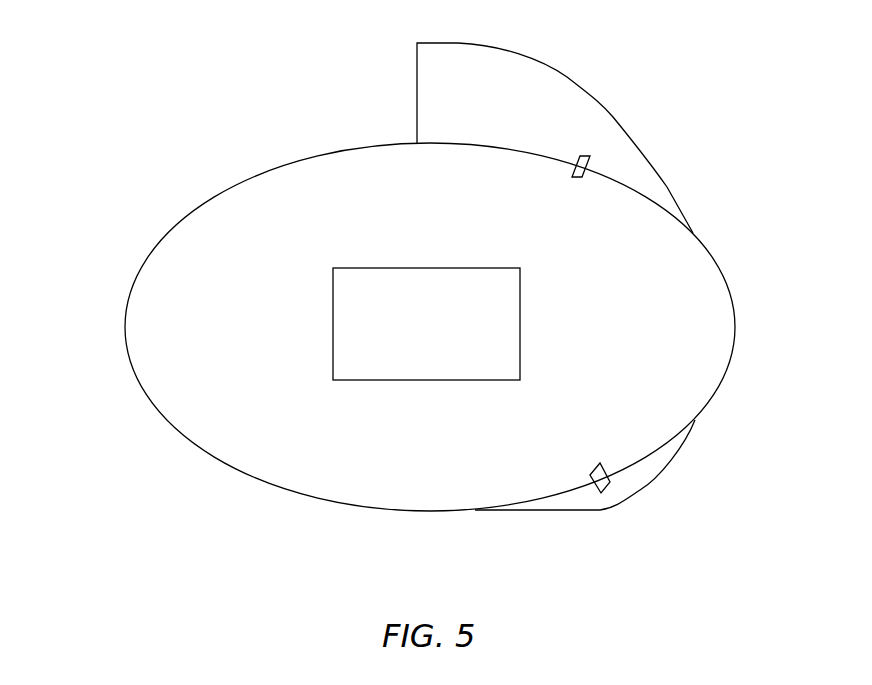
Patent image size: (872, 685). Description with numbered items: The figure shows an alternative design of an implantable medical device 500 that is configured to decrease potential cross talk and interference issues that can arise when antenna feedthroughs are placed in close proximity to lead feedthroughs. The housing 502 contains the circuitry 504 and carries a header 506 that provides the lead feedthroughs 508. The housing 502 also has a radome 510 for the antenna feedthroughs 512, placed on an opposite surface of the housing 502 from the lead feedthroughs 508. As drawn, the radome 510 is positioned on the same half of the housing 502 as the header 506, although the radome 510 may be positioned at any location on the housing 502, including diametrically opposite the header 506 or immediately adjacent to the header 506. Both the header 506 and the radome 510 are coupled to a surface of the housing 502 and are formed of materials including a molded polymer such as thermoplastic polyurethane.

The implantable medical device 500 is at (112, 99).
The housing 502 is at (177, 450).
The circuitry 504 is at (426, 324).
The header 506 is at (662, 155).
The lead feedthroughs 508 is at (573, 193).
The radome 510 is at (658, 495).
The antenna feedthroughs 512 is at (582, 452).